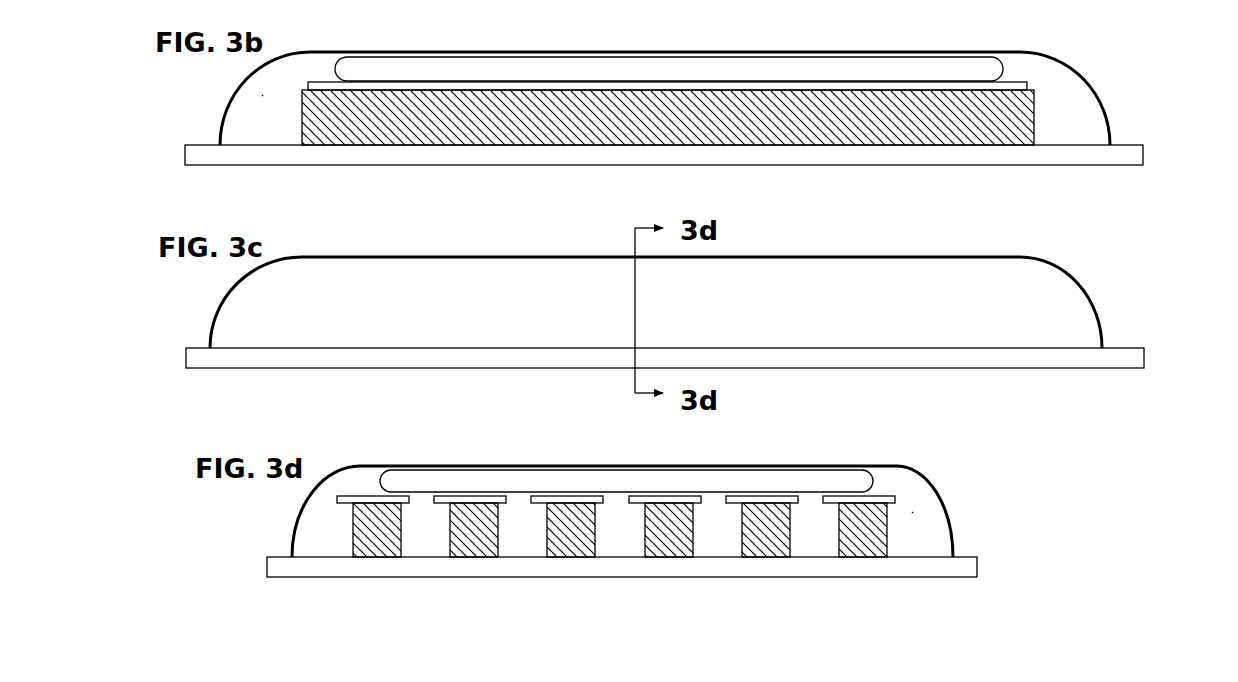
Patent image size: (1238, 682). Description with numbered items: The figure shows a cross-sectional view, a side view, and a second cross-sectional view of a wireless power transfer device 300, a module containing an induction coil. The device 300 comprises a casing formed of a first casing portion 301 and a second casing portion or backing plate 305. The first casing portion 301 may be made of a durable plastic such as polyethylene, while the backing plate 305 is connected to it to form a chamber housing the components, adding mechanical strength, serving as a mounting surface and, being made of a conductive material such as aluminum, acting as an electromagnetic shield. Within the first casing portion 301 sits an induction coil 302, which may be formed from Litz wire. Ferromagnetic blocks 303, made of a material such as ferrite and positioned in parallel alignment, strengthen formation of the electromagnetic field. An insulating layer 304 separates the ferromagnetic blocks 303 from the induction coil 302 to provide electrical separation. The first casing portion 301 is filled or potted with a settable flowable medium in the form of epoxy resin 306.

In FIG. 3B, the wireless power transfer device 300 is at (90, 197).
In FIG. 3C, the wireless power transfer device 300 is at (126, 392).
In FIG. 3D, the wireless power transfer device 300 is at (214, 592).
In FIG. 3B, the first casing portion 301 is at (520, 52).
In FIG. 3C, the first casing portion 301 is at (1065, 270).
In FIG. 3D, the first casing portion 301 is at (955, 532).
In FIG. 3B, the induction coil 302 is at (950, 72).
In FIG. 3D, the induction coil 302 is at (380, 482).
In FIG. 3B, the ferromagnetic blocks 303 is at (1005, 120).
In FIG. 3D, the ferromagnetic blocks 303 is at (862, 532).
In FIG. 3B, the insulating layer 304 is at (1028, 82).
In FIG. 3D, the insulating layer 304 is at (337, 505).
In FIG. 3B, the second casing portion or backing plate 305 is at (183, 147).
In FIG. 3C, the second casing portion or backing plate 305 is at (1117, 345).
In FIG. 3D, the second casing portion or backing plate 305 is at (978, 575).
In FIG. 3B, the epoxy resin 306 is at (263, 95).
In FIG. 3D, the epoxy resin 306 is at (913, 512).